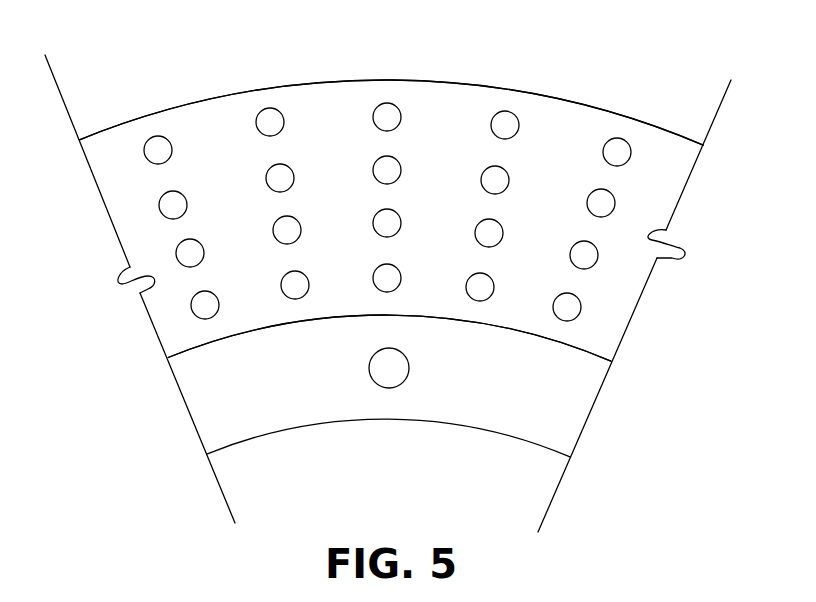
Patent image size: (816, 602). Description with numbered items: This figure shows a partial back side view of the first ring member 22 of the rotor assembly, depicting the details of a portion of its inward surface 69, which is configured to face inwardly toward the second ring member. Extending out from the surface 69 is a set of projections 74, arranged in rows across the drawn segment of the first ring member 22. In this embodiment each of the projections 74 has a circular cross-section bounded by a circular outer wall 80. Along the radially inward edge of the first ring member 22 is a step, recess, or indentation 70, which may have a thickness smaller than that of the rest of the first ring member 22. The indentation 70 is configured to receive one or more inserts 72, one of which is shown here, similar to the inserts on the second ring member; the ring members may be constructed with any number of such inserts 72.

The first ring member 22 is at (207, 94).
The surface 69 is at (324, 107).
The indentation 70 is at (468, 388).
The insert 72 is at (369, 370).
The projections 74 is at (373, 218).
The circular outer wall 80 is at (617, 137).